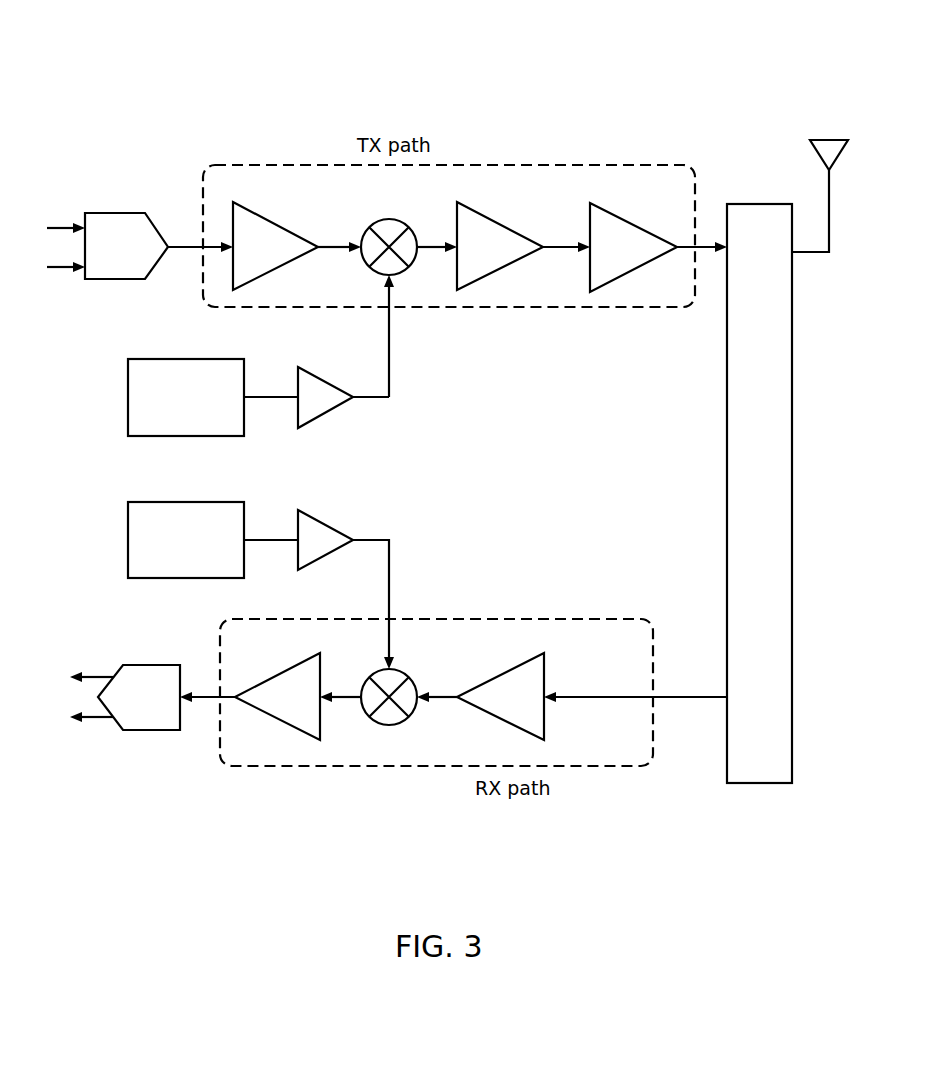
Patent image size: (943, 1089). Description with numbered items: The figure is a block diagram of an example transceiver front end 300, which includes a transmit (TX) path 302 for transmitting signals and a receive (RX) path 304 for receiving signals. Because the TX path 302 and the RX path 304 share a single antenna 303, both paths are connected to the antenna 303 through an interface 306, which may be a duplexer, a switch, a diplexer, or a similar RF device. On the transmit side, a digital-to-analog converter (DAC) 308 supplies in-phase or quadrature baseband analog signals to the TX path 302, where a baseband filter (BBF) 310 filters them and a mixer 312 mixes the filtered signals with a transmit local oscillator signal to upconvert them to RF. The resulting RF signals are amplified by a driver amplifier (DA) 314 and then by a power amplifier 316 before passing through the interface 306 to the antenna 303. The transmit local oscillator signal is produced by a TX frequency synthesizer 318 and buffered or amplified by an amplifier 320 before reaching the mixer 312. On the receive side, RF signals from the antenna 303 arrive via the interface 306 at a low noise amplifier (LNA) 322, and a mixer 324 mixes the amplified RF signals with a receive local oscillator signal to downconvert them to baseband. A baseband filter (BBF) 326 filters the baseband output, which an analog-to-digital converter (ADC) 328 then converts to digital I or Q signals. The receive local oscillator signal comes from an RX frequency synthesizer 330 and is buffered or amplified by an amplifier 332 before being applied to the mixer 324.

The transceiver front end 300 is at (738, 56).
The transmit (TX) path 302 is at (620, 165).
The antenna 303 is at (823, 140).
The receive (RX) path 304 is at (590, 619).
The interface 306 is at (752, 204).
The digital-to-analog converter (DAC) 308 is at (110, 213).
The baseband filter (BBF) 310 is at (280, 222).
The mixer 312 is at (386, 219).
The driver amplifier (DA) 314 is at (504, 222).
The power amplifier (PA) 316 is at (622, 218).
The TX frequency synthesizer 318 is at (210, 359).
The amplifier 320 is at (314, 372).
The low noise amplifier (LNA) 322 is at (547, 680).
The mixer 324 is at (406, 676).
The baseband filter (BBF) 326 is at (291, 667).
The analog-to-digital converter (ADC) 328 is at (148, 665).
The RX frequency synthesizer 330 is at (210, 502).
The amplifier 332 is at (314, 515).